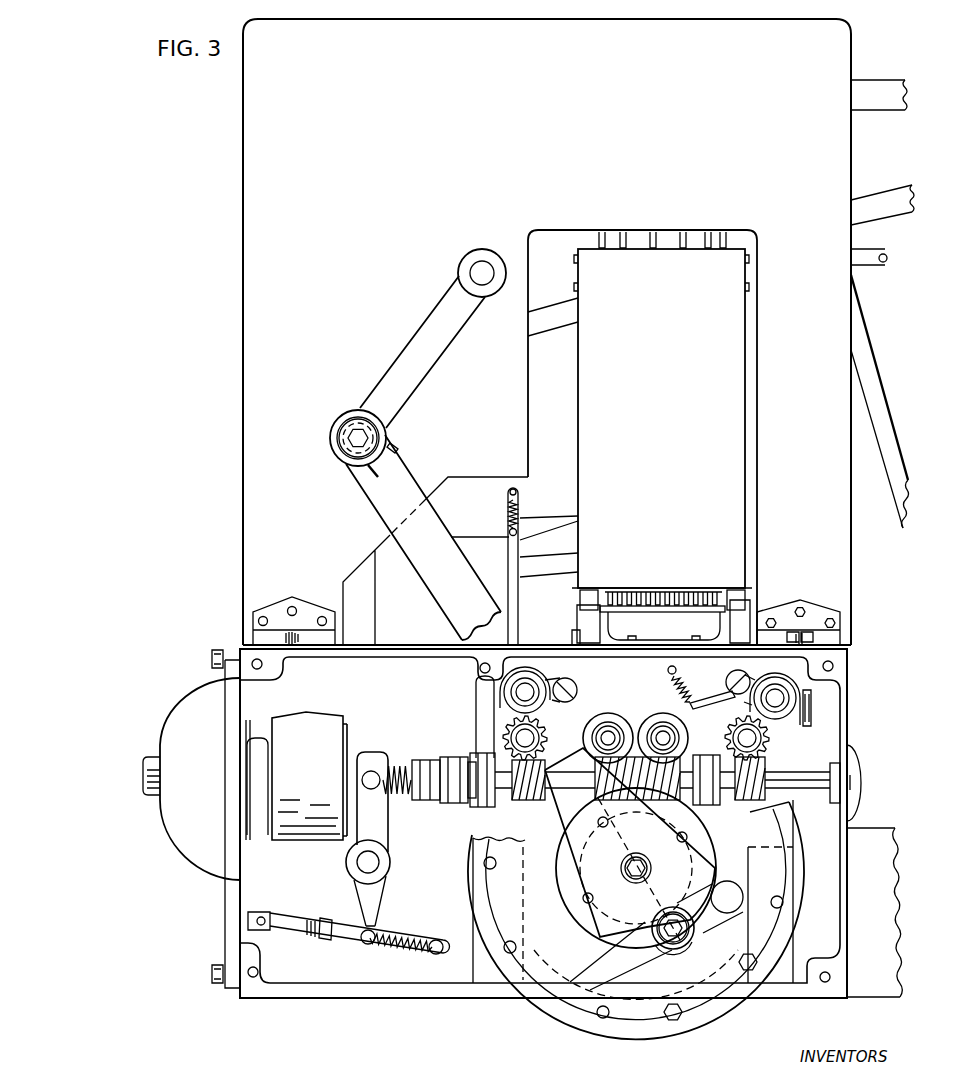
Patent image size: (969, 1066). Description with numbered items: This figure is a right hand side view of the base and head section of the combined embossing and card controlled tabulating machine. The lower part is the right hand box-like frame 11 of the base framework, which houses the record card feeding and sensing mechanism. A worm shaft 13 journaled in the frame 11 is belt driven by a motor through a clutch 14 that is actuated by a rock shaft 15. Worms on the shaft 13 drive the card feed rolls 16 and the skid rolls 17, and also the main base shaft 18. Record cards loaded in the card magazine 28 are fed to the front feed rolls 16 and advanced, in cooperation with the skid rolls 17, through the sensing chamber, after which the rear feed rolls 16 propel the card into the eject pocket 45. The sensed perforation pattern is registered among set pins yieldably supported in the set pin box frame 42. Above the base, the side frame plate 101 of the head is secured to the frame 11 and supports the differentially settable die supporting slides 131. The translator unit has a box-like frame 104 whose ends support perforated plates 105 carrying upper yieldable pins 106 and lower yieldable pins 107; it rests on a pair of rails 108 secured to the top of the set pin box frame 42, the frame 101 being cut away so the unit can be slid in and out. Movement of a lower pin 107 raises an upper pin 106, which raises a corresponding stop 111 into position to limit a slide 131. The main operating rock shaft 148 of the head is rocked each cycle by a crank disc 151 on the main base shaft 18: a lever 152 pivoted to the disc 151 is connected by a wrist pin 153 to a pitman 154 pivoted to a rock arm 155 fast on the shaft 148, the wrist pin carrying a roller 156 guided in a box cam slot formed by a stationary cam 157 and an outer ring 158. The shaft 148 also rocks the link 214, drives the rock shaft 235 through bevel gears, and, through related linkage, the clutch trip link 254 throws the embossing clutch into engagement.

The right hand box-like frame 11 is at (408, 696).
The worm shaft 13 is at (528, 794).
The clutch 14 is at (359, 758).
The rock shaft 15 is at (364, 861).
The card feed rolls 16 is at (528, 738).
The skid rolls 17 is at (660, 734).
The main base shaft 18 is at (642, 856).
The card magazine 28 is at (411, 618).
The set pin box frame 42 is at (588, 622).
The eject pocket 45 is at (886, 840).
The side frame plate 101 is at (379, 167).
The translator box-like frame 104 is at (612, 528).
The perforated plates 105 is at (697, 600).
The upper yieldable pins 106 is at (662, 250).
The lower yieldable pins 107 is at (645, 598).
The rails 108 is at (595, 596).
The stop 111 is at (625, 240).
The differentially settable die supporting slides 131 is at (903, 78).
The rock shaft 148 is at (478, 262).
The crank disc 151 is at (718, 843).
The lever 152 is at (718, 958).
The wrist pin 153 is at (663, 931).
The pitman 154 is at (468, 586).
The rock arm 155 is at (440, 340).
The roller 156 is at (658, 952).
The stationary cam 157 is at (567, 878).
The outer ring 158 is at (530, 958).
The link 214 is at (903, 188).
The rock shaft 235 is at (885, 266).
The clutch trip link 254 is at (897, 494).